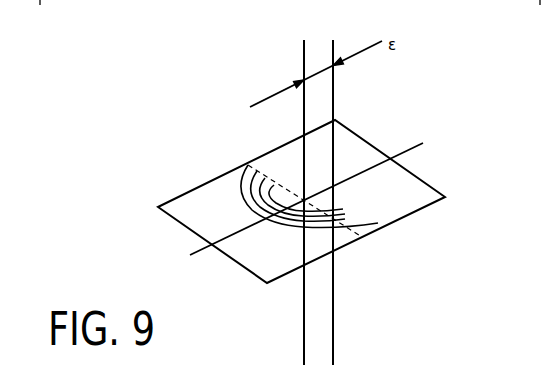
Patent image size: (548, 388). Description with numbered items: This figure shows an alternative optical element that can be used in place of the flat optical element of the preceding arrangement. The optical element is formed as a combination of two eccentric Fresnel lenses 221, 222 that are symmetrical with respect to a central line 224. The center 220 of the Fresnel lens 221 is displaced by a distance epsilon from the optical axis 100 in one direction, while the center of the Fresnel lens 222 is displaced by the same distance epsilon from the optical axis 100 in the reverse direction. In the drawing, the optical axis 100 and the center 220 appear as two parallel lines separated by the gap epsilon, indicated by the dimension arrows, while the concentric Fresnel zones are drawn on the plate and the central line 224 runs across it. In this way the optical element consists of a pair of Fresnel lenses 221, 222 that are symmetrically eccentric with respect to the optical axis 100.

The optical axis 100 is at (304, 52).
The center of the Fresnel lens 220 is at (333, 46).
The eccentric Fresnel lens 221 is at (190, 223).
The eccentric Fresnel lens 222 is at (407, 173).
The central line 224 is at (378, 224).